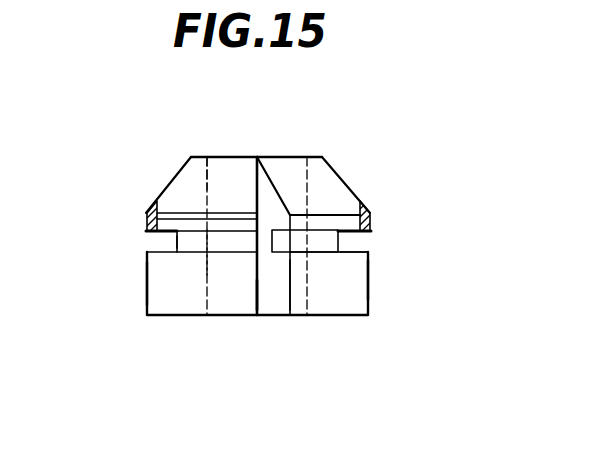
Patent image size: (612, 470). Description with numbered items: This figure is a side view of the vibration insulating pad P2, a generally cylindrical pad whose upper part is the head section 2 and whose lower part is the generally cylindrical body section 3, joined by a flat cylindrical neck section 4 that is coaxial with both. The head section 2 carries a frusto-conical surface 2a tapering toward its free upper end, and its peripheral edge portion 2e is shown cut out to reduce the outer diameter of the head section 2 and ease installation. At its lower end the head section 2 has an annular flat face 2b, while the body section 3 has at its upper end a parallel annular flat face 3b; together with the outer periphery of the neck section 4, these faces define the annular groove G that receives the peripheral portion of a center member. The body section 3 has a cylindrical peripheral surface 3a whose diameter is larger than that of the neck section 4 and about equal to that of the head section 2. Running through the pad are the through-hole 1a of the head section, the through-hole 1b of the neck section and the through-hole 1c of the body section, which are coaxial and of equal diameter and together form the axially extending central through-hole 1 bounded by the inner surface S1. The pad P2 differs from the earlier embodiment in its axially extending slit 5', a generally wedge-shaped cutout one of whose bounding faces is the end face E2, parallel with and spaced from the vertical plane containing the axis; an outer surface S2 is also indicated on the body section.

The vibration insulating pad P2 is at (346, 160).
The head section 2 is at (353, 192).
The frusto-conical surface 2a is at (178, 190).
The peripheral edge portion 2e is at (147, 223).
The annular flat face 2b is at (366, 232).
The neck section 4 is at (340, 240).
The body section 3 is at (357, 297).
The cylindrical peripheral surface 3a is at (158, 283).
The annular flat face 3b is at (363, 250).
The second surface S2 is at (357, 268).
The annular groove G is at (167, 243).
The end face E2 is at (275, 277).
The slit 5' is at (285, 335).
The axially extending central through-hole 1 is at (206, 290).
The through-hole 1a is at (209, 155).
The through-hole 1b is at (207, 238).
The through-hole 1c is at (204, 252).
The inner surface S1 is at (298, 155).